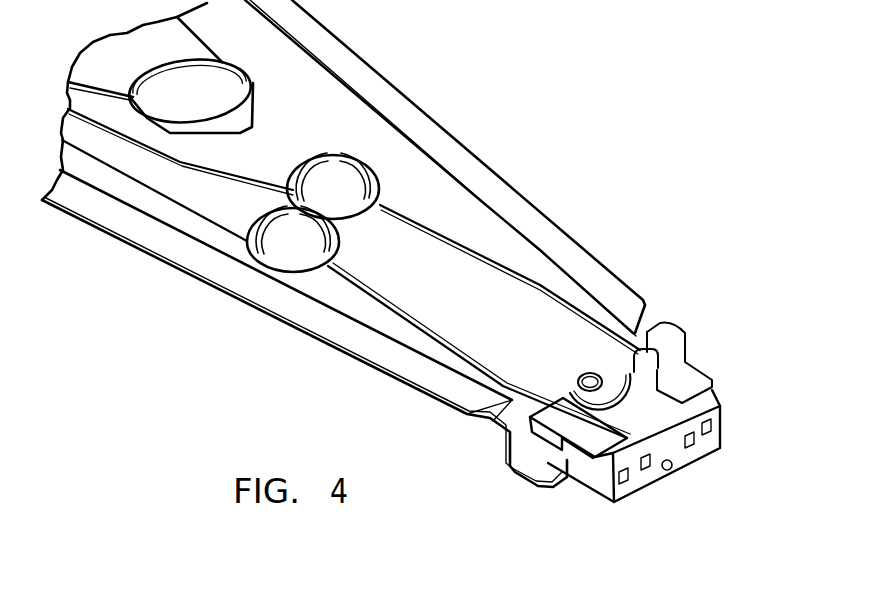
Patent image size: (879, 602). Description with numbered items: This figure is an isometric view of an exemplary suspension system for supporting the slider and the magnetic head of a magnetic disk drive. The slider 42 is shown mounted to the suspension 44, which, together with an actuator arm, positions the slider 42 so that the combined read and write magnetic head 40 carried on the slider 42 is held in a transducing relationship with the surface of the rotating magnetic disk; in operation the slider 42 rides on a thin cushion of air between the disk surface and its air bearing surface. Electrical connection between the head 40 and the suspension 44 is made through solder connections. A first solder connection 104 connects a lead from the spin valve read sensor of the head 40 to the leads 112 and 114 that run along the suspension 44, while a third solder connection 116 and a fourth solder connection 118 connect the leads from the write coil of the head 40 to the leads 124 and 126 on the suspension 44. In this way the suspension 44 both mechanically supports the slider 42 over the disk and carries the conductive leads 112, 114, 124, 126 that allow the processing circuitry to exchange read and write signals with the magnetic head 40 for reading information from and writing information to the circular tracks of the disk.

The suspension 44 is at (343, 243).
The lead 114 is at (493, 163).
The lead 112 is at (354, 273).
The lead 124 is at (393, 300).
The lead 126 is at (463, 248).
The slider 42 is at (622, 451).
The first solder connection 104 is at (613, 502).
The third solder connection 116 is at (638, 470).
The fourth solder connection 118 is at (700, 450).
The magnetic head 40 is at (673, 478).